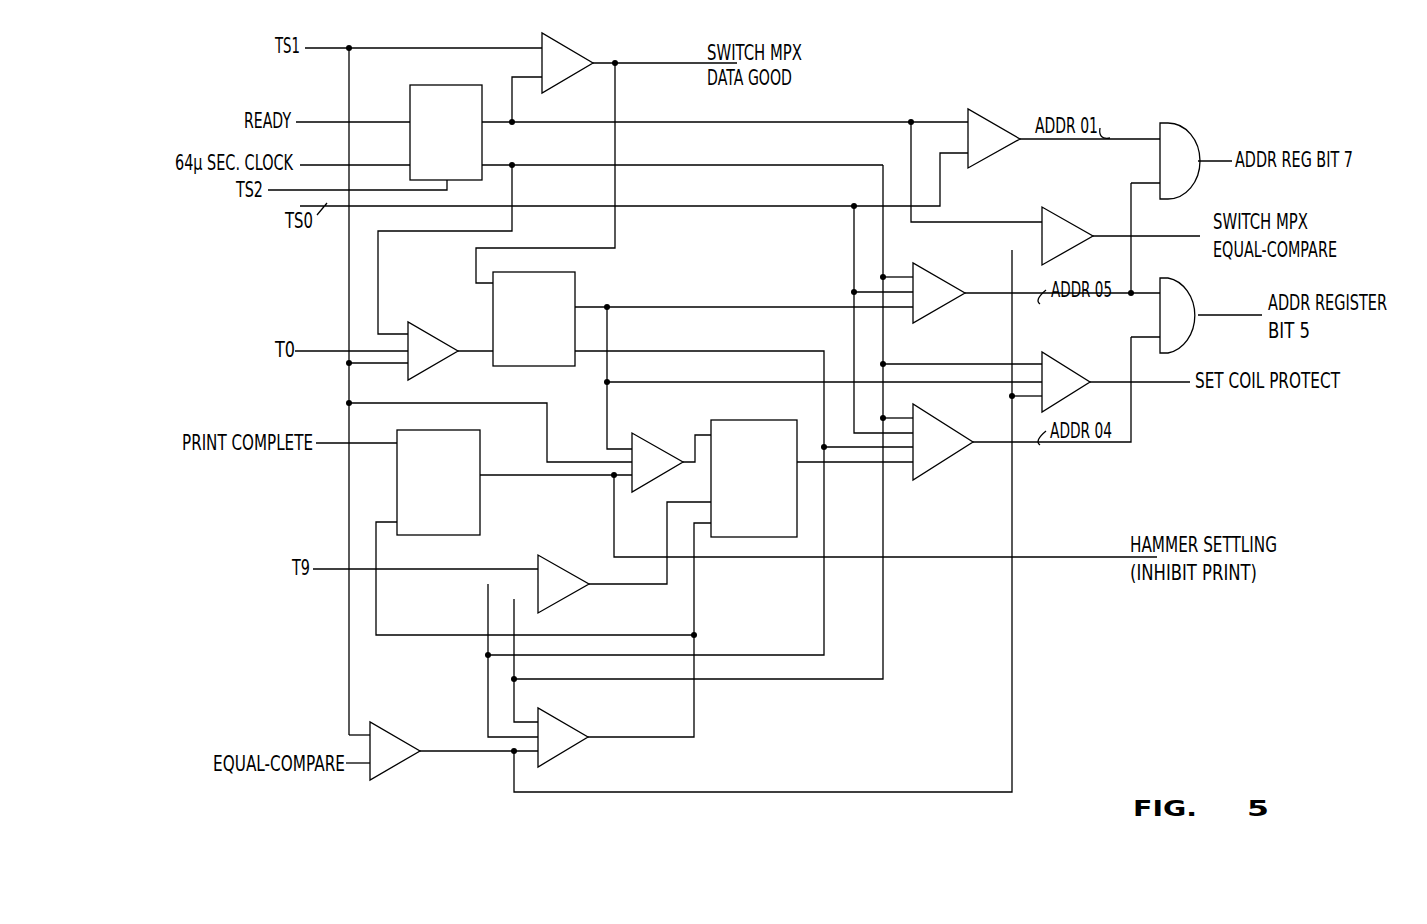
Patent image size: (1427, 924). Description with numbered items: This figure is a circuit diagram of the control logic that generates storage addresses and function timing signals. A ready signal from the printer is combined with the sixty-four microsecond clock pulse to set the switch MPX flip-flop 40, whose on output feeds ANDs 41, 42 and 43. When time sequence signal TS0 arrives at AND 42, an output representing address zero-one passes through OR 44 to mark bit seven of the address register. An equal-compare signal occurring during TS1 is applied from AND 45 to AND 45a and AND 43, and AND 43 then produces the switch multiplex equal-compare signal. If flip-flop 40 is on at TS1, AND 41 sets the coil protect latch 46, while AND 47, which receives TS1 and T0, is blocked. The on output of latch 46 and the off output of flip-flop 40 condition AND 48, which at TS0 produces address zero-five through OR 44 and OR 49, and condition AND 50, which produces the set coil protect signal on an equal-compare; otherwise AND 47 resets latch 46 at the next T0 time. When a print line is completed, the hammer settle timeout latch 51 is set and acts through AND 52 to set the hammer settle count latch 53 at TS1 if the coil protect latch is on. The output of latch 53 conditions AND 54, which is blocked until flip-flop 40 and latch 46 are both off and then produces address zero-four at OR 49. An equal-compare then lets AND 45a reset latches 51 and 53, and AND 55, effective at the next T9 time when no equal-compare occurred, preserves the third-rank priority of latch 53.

The switch MPX flip-flop 40 is at (458, 86).
The AND 41 is at (563, 50).
The AND 42 is at (984, 117).
The AND 43 is at (1055, 214).
The OR 44 is at (1178, 130).
The AND 45 is at (384, 732).
The AND 45a is at (565, 723).
The coil protect latch 46 is at (577, 277).
The AND 47 is at (421, 327).
The AND 48 is at (928, 282).
The OR 49 is at (1179, 295).
The AND 50 is at (1057, 363).
The hammer settle timeout latch 51 is at (482, 439).
The AND 52 is at (640, 440).
The hammer settle count latch 53 is at (762, 420).
The AND 54 is at (940, 419).
The AND 55 is at (552, 564).